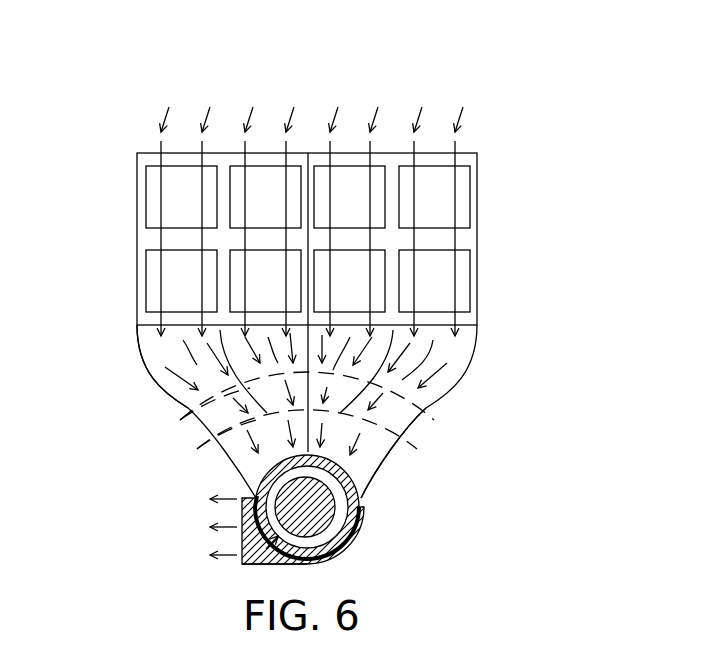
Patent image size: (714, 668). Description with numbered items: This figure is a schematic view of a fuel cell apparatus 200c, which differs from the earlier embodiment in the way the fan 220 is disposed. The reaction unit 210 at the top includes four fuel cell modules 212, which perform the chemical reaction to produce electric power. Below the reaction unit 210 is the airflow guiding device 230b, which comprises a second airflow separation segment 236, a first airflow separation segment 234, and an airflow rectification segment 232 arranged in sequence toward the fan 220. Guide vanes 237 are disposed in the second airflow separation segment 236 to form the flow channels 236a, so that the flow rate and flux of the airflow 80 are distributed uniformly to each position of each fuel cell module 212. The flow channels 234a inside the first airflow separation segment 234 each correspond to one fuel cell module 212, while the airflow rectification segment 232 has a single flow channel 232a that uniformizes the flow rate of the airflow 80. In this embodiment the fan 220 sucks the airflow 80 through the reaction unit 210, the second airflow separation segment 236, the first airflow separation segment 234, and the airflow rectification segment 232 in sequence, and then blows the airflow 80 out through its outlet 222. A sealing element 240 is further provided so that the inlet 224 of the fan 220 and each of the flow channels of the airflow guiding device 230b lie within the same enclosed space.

The fuel cell apparatus 200c is at (601, 607).
The reaction unit 210 is at (445, 59).
The fuel cell modules 212 is at (477, 105).
The airflow 80 is at (462, 114).
The airflow guiding device 230b is at (542, 397).
The guide vanes 237 is at (433, 342).
The second airflow separation segment 236 is at (445, 408).
The first airflow separation segment 234 is at (408, 427).
The airflow rectification segment 232 is at (387, 458).
The flow channels 236a is at (172, 380).
The flow channels 234a is at (213, 413).
The flow channel 232a is at (240, 443).
The sealing element 240 is at (360, 533).
The fan 220 is at (328, 558).
The outlet 222 is at (240, 542).
The inlet 224 is at (242, 566).